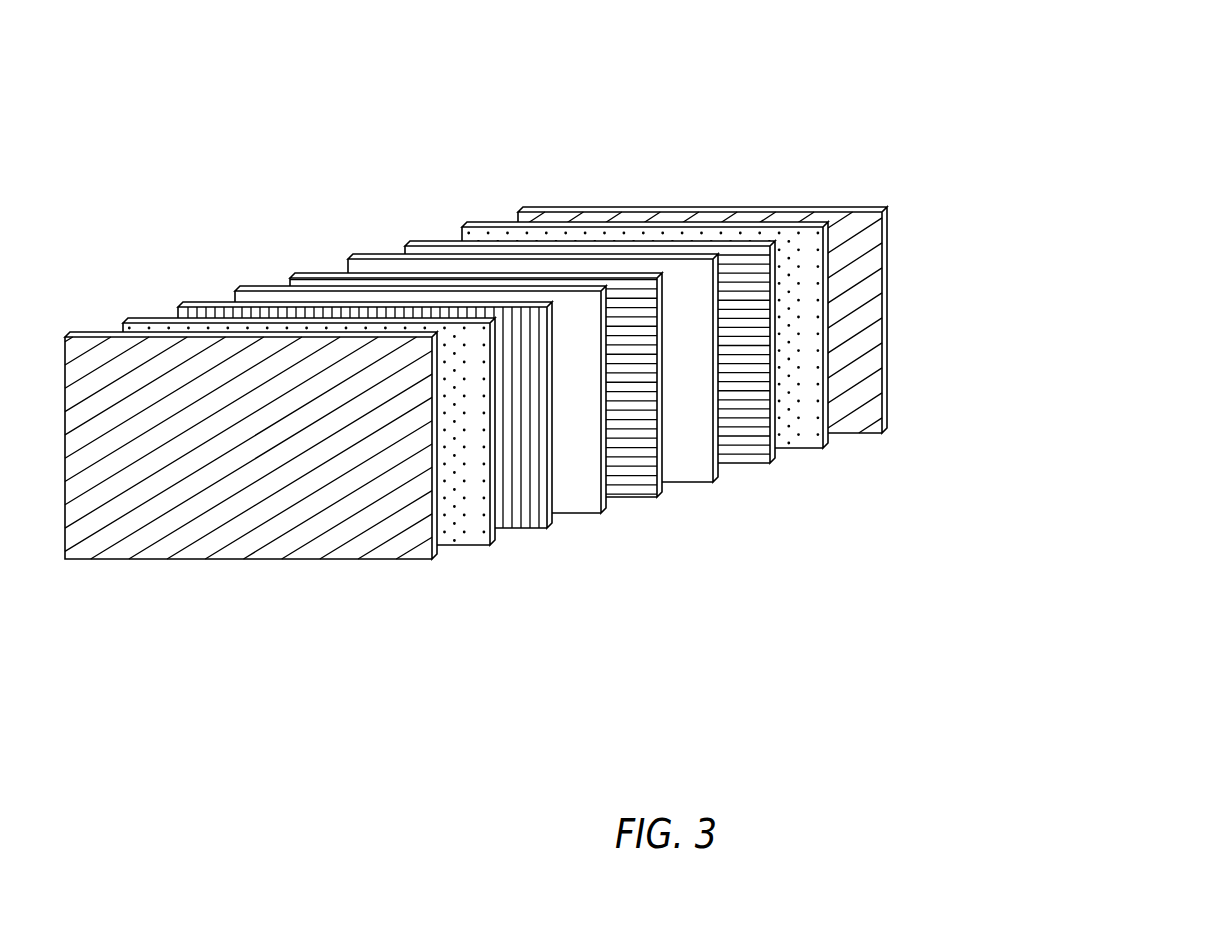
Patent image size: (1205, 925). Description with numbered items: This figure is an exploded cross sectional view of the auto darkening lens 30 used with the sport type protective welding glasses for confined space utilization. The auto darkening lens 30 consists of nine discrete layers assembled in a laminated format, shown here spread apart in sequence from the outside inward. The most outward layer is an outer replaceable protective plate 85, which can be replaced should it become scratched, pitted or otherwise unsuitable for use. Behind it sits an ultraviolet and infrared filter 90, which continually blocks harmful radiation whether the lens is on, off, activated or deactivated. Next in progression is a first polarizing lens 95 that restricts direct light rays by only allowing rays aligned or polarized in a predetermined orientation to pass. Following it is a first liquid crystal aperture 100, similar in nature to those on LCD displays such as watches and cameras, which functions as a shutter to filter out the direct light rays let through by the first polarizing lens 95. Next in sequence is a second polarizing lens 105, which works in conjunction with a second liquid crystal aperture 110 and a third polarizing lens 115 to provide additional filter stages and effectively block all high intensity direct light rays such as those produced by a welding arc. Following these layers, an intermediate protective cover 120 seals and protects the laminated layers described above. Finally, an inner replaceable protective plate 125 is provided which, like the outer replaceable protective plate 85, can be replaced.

The auto darkening lens 30 is at (1113, 150).
The outer replaceable protective plate 85 is at (416, 553).
The ultraviolet and infrared filter 90 is at (470, 538).
The first polarizing lens 95 is at (522, 517).
The first liquid crystal aperture 100 is at (582, 510).
The second polarizing lens 105 is at (643, 482).
The second liquid crystal aperture 110 is at (698, 467).
The third polarizing lens 115 is at (755, 447).
The intermediate protective cover 120 is at (808, 432).
The inner replaceable protective plate 125 is at (873, 408).